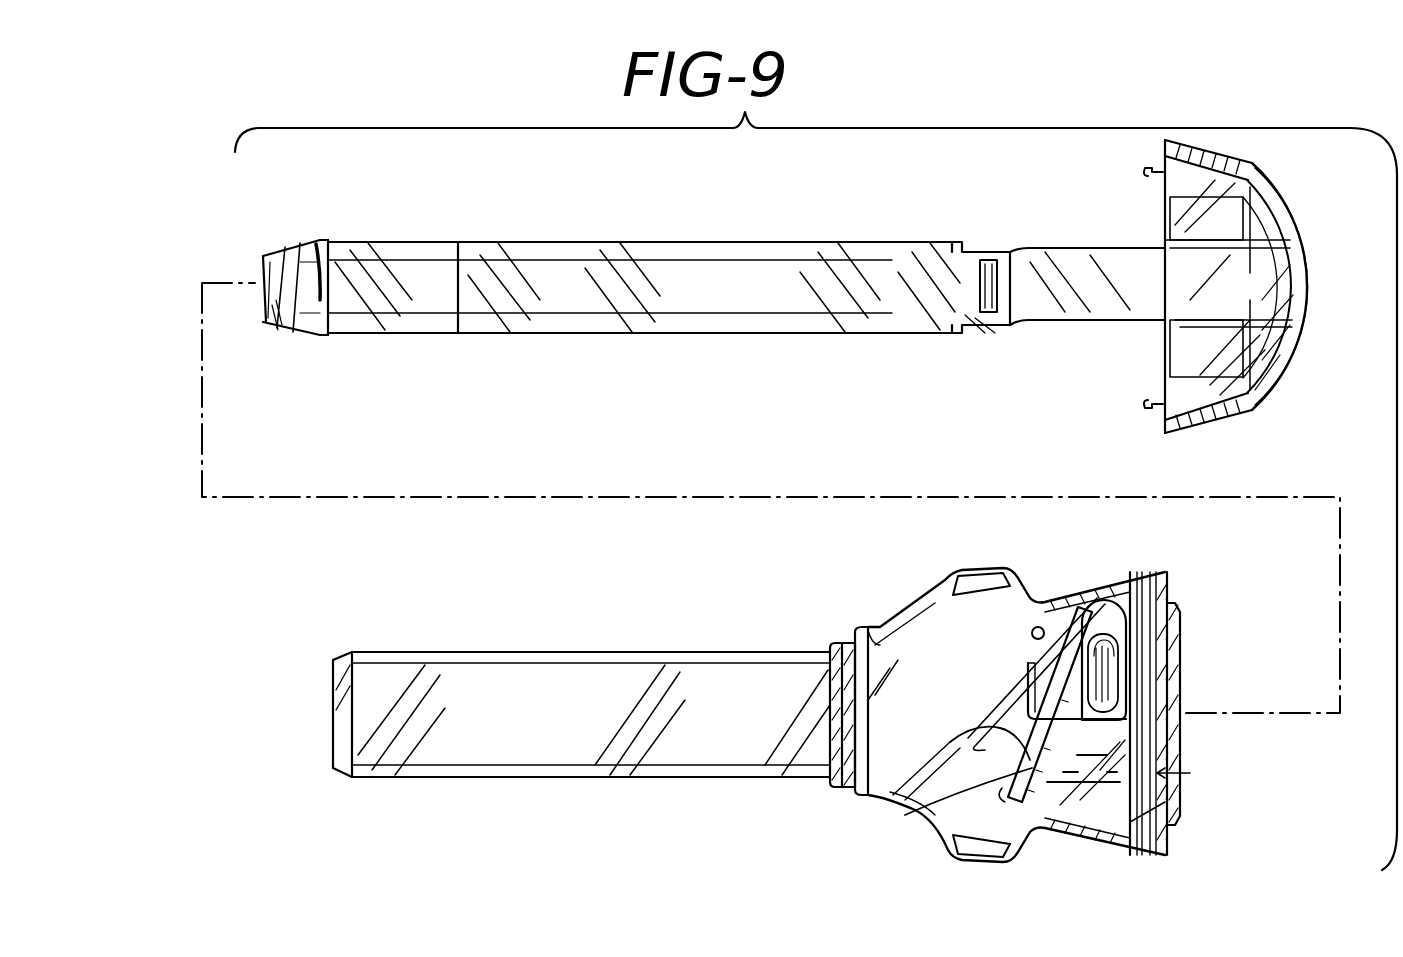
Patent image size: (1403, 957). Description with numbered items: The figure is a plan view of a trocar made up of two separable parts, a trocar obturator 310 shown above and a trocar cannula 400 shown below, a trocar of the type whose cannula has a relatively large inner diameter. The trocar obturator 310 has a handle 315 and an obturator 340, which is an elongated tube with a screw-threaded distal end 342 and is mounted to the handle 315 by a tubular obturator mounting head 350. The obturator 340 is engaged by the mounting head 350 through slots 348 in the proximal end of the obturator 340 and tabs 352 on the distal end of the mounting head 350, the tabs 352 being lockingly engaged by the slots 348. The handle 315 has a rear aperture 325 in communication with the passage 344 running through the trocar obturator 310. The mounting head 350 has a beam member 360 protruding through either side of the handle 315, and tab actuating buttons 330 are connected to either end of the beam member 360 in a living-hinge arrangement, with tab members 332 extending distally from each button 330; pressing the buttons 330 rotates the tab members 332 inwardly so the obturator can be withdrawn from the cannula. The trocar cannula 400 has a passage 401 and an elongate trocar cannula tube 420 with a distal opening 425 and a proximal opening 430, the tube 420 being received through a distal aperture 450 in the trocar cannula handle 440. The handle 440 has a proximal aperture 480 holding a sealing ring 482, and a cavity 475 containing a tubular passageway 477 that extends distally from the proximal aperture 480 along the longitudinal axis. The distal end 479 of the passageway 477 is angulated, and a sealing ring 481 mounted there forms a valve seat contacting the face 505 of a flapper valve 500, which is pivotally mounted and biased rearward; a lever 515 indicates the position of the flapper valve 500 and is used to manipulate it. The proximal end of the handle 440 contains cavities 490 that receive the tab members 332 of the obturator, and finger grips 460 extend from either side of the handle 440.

The trocar obturator 310 is at (383, 388).
The handle 315 is at (1275, 225).
The rear aperture 325 is at (1305, 300).
The tab actuating buttons 330 is at (1225, 160).
The tab members 332 is at (1150, 172).
The obturator 340 is at (598, 245).
The screw-threaded distal end 342 is at (297, 258).
The passage 344 is at (1320, 283).
The slots 348 is at (988, 262).
The obturator mounting head 350 is at (1073, 330).
The tabs 352 is at (985, 302).
The beam member 360 is at (1250, 380).
The trocar cannula 400 is at (412, 805).
The passage 401 is at (320, 738).
The trocar cannula tube 420 is at (468, 652).
The distal opening 425 is at (332, 655).
The proximal opening 430 is at (870, 652).
The trocar cannula handle 440 is at (1132, 572).
The distal aperture 450 is at (840, 780).
The finger grips 460 is at (980, 570).
The cavity 475 is at (920, 702).
The tubular passageway 477 is at (1150, 850).
The distal end 479 is at (1090, 765).
The proximal aperture 480 is at (1172, 690).
The sealing ring 481 is at (1062, 790).
The sealing ring 482 is at (1190, 772).
The cavities 490 is at (1162, 600).
The flapper valve 500 is at (1005, 740).
The face 505 is at (1000, 775).
The lever 515 is at (1100, 625).